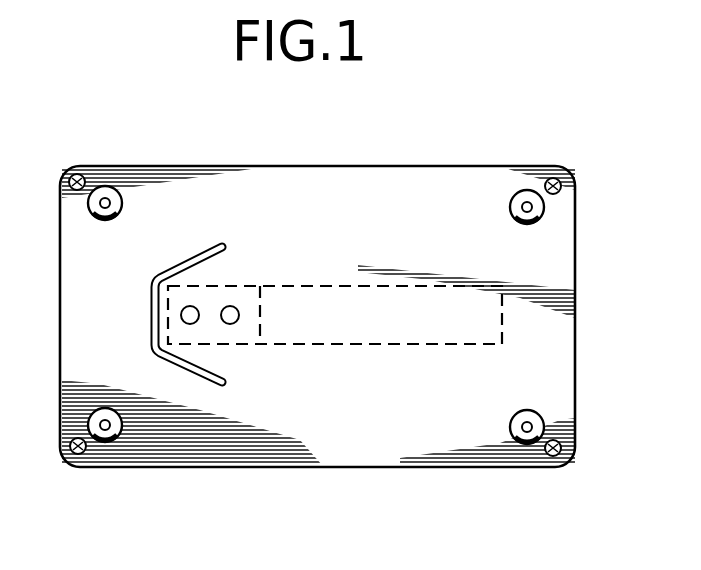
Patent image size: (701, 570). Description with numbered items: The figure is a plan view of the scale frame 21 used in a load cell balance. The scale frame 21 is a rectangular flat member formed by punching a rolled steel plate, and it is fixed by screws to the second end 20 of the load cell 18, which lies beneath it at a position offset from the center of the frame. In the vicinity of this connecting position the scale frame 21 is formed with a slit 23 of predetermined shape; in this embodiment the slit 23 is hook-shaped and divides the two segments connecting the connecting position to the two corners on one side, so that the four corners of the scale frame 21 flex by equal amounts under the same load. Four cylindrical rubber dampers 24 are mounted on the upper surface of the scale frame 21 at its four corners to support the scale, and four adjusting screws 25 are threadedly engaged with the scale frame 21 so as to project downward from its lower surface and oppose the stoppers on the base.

The load cell 18 is at (395, 346).
The second end of the load cell 20 is at (232, 285).
The scale frame 21 is at (370, 200).
The slit 23 is at (212, 386).
The cylindrical dampers 24 is at (118, 187).
The adjusting screws 25 is at (76, 173).